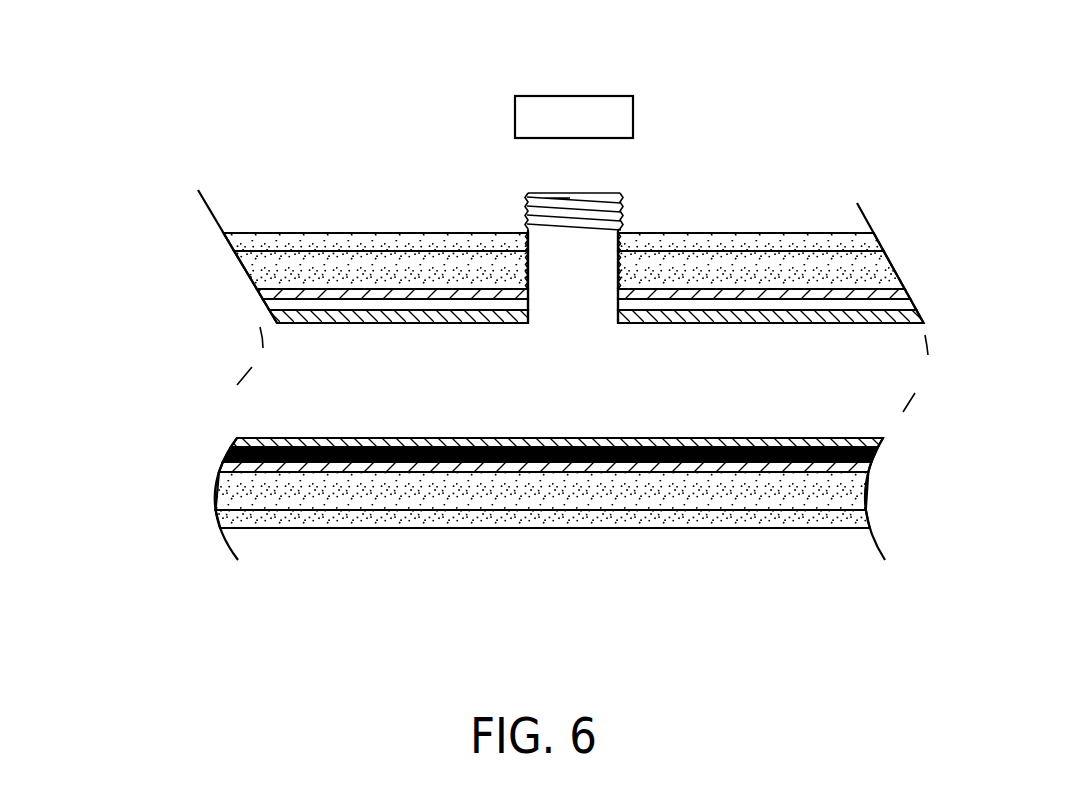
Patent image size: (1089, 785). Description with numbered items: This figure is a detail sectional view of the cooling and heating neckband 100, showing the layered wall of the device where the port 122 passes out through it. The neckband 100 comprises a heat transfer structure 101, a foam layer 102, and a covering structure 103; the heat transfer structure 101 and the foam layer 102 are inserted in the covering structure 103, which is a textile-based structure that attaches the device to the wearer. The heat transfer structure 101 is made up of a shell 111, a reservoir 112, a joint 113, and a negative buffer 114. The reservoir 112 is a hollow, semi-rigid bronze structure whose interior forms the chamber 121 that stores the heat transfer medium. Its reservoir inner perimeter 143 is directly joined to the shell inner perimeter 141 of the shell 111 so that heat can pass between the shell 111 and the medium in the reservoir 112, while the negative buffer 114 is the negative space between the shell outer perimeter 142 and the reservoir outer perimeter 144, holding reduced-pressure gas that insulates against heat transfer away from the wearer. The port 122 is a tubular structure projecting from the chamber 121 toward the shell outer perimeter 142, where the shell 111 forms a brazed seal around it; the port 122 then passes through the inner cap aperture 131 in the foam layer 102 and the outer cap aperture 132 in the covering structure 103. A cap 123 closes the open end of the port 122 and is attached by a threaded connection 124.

The cooling and heating neckband 100 is at (116, 116).
The heat transfer structure 101 is at (180, 272).
The foam layer 102 is at (868, 268).
The covering structure 103 is at (845, 242).
The shell 111 is at (907, 295).
The reservoir 112 is at (915, 315).
The joint 113 is at (877, 455).
The negative buffer 114 is at (415, 307).
The chamber 121 is at (385, 402).
The port 122 is at (623, 230).
The cap 123 is at (595, 105).
The threaded connection 124 is at (618, 198).
The inner cap aperture 131 is at (522, 262).
The outer cap aperture 132 is at (625, 270).
The shell inner perimeter 141 is at (520, 473).
The shell outer perimeter 142 is at (330, 293).
The reservoir inner perimeter 143 is at (470, 437).
The reservoir outer perimeter 144 is at (353, 323).